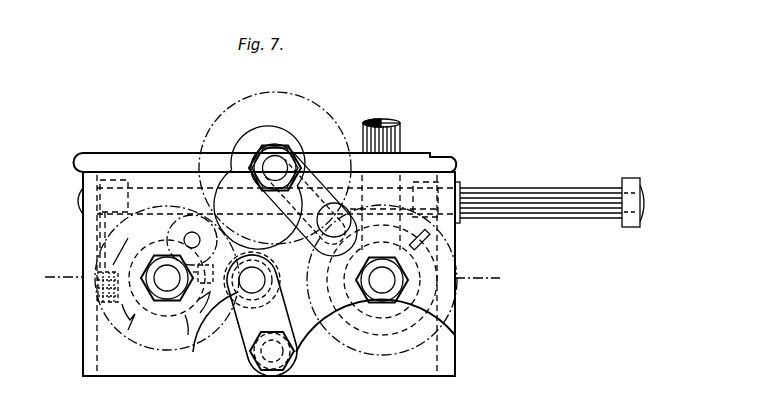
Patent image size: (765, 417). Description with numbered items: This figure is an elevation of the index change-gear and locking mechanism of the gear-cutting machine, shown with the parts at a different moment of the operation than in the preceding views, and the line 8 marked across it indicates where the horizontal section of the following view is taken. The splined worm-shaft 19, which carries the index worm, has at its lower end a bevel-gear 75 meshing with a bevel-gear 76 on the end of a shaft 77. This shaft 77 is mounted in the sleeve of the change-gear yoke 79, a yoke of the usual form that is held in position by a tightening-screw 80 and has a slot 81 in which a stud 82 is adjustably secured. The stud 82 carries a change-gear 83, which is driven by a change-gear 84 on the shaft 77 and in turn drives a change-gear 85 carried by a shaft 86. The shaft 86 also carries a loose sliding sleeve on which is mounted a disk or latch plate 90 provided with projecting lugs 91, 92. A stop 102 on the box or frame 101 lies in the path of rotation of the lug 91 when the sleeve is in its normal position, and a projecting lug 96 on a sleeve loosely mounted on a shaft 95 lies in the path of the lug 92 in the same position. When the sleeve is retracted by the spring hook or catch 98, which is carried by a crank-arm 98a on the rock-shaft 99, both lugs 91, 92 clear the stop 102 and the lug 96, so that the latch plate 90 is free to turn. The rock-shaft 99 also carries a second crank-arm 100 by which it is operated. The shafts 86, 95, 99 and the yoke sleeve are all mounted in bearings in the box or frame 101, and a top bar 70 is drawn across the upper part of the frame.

The section line 8 is at (271, 275).
The splined worm-shaft 19 is at (368, 137).
The top bar 70 is at (170, 208).
The bevel-gear 75 is at (432, 240).
The bevel-gear 76 is at (425, 306).
The shaft 77 is at (383, 288).
The change-gear yoke 79 is at (306, 340).
The tightening-screw 80 is at (276, 365).
The slot 81 is at (304, 200).
The stud 82 is at (282, 170).
The change-gear 83 is at (330, 130).
The change-gear 84 is at (417, 343).
The change-gear 85 is at (160, 330).
The shaft 86 is at (172, 286).
The disk or latch plate 90 is at (190, 318).
The projecting lug 91 is at (132, 318).
The projecting lug 92 is at (210, 285).
The shaft 95 is at (258, 285).
The projecting lug 96 is at (208, 308).
The spring hook or catch 98 is at (112, 290).
The crank-arm 98a is at (102, 255).
The rock-shaft 99 is at (535, 192).
The crank-arm 100 is at (630, 180).
The box or frame 101 is at (456, 356).
The stop 102 is at (165, 240).